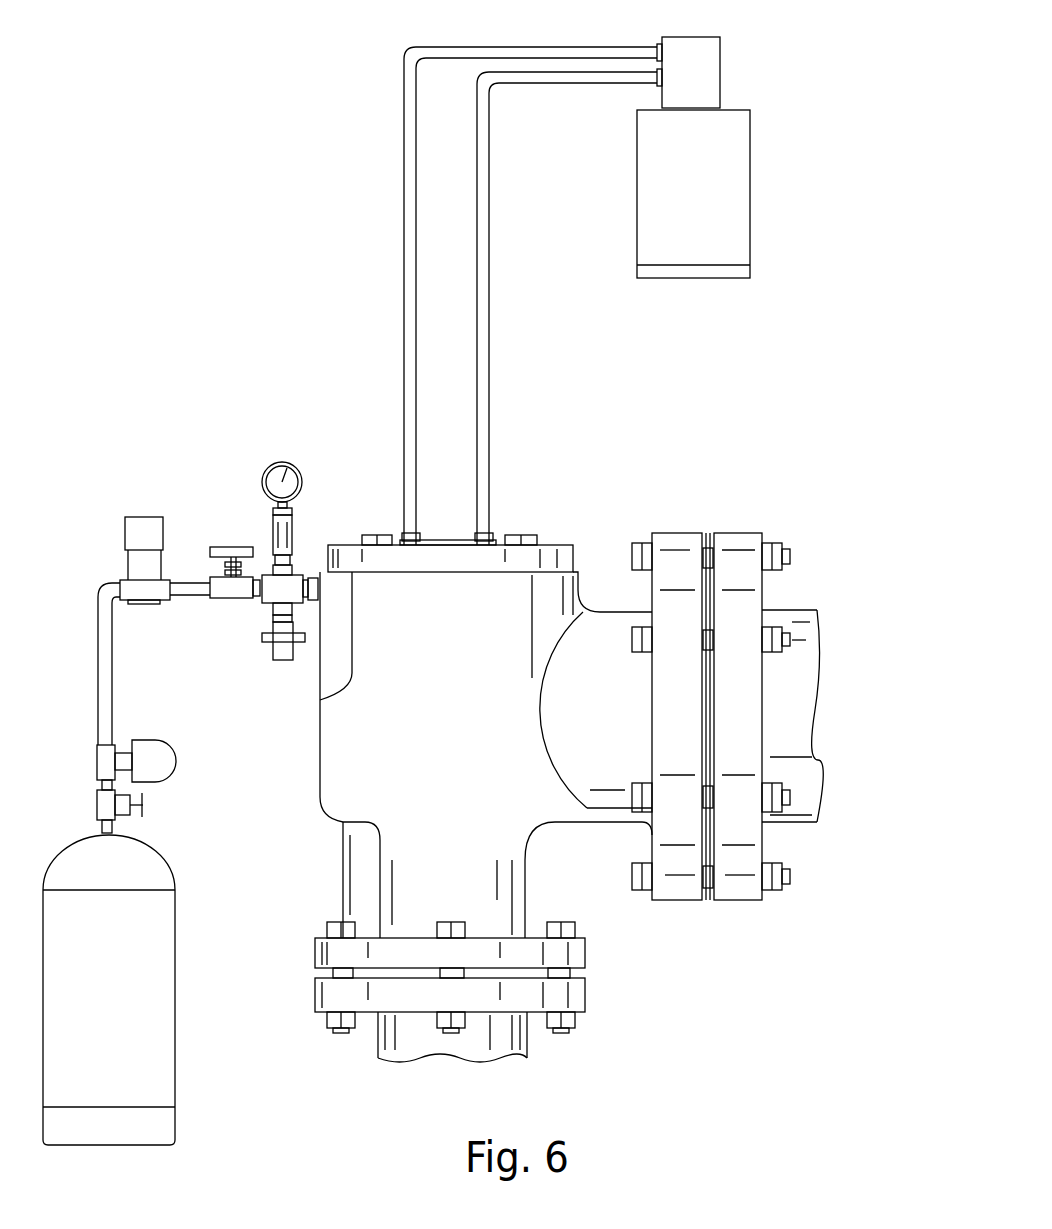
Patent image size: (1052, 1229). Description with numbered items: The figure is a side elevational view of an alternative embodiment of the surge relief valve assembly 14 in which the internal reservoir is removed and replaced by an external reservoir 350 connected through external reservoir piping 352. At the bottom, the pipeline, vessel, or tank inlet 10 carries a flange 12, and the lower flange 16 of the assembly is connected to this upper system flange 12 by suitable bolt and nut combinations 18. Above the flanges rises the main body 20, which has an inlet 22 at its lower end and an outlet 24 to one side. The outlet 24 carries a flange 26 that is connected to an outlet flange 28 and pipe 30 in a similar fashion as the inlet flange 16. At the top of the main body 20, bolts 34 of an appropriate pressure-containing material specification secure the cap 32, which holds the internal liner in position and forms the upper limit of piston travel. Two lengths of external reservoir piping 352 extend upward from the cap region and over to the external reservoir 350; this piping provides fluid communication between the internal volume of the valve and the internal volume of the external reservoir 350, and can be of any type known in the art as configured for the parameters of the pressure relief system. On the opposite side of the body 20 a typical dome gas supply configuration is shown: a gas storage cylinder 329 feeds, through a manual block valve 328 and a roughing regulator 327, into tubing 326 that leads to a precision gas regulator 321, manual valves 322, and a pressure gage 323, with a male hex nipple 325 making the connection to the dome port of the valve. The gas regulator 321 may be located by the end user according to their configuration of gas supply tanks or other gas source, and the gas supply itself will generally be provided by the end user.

The inlet 10 is at (388, 1045).
The flange 12 is at (327, 995).
The surge relief valve assembly 14 is at (582, 526).
The lower flange 16 is at (577, 950).
The bolt and nut combinations 18 is at (455, 928).
The main body 20 is at (418, 708).
The inlet 22 is at (513, 884).
The outlet 24 is at (608, 810).
The flange 26 is at (678, 545).
The outlet flange 28 is at (733, 545).
The pipe 30 is at (800, 620).
The cap 32 is at (447, 562).
The bolts 34 is at (532, 532).
The precision gas regulator 321 is at (148, 530).
The manual valves 322 is at (273, 532).
The pressure gage 323 is at (268, 470).
The male hex nipple 325 is at (312, 575).
The tubing 326 is at (103, 594).
The roughing regulator 327 is at (163, 760).
The manual block valve 328 is at (143, 808).
The gas storage cylinder 329 is at (147, 967).
The external reservoir 350 is at (658, 208).
The external reservoir piping 352 is at (480, 150).